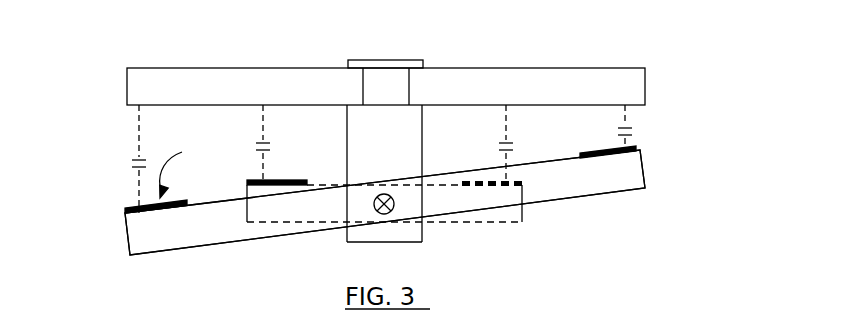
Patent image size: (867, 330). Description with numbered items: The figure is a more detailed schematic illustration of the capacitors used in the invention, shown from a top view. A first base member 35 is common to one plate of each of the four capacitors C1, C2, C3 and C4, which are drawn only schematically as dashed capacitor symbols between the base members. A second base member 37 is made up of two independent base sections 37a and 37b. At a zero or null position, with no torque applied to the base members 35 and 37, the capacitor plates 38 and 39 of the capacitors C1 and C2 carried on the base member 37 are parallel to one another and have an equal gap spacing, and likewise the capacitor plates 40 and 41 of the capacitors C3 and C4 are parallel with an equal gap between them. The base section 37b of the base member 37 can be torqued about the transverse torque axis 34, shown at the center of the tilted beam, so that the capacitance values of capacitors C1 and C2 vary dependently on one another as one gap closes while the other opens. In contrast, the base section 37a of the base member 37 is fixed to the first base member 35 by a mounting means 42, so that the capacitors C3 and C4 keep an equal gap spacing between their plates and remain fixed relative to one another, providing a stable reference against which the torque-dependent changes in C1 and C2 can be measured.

The transverse torque axis 34 is at (376, 211).
The first base member 35 is at (533, 67).
The second base member 37 is at (443, 232).
The base section 37a is at (503, 218).
The base section 37b is at (187, 237).
The capacitor plate 38 is at (128, 213).
The capacitor plate 39 is at (632, 148).
The capacitor plate 40 is at (283, 180).
The capacitor plate 41 is at (517, 182).
The mounting means 42 is at (390, 58).
The capacitor C1 is at (611, 128).
The capacitor C2 is at (120, 159).
The capacitor C3 is at (487, 145).
The capacitor C4 is at (244, 142).